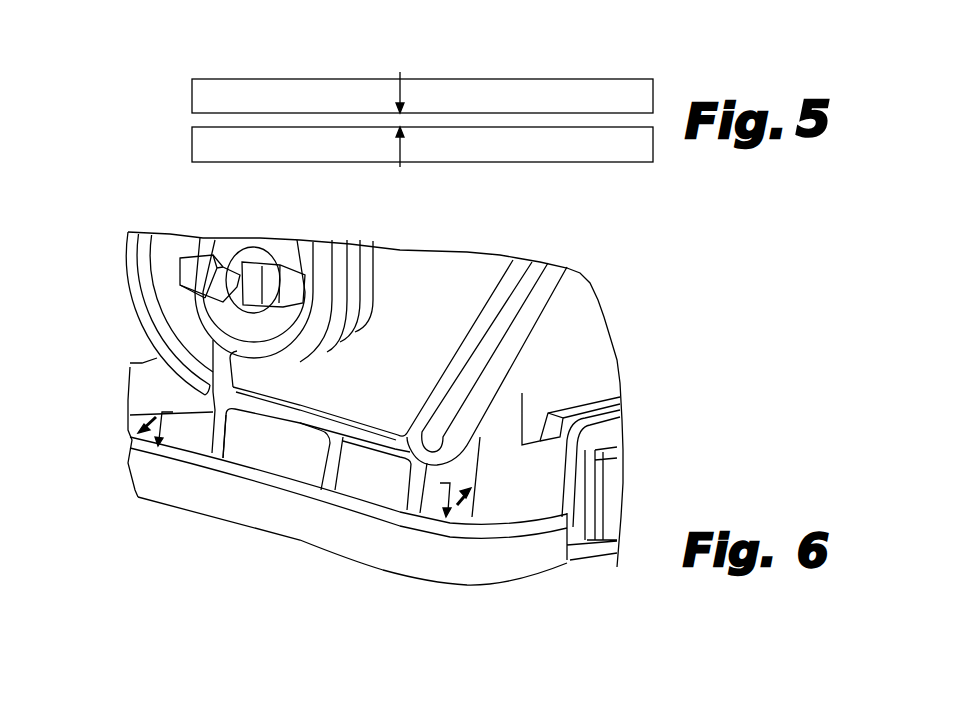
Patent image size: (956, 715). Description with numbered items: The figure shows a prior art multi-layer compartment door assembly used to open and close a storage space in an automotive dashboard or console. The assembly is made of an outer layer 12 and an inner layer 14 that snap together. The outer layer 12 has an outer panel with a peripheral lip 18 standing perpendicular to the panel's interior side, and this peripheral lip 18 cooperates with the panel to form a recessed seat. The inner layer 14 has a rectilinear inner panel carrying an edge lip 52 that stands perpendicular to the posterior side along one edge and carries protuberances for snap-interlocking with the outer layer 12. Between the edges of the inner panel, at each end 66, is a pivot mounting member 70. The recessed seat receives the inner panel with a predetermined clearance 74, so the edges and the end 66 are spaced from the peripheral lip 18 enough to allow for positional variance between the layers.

In FIG. 6, the outer layer 12 is at (167, 513).
In FIG. 6, the inner layer 14 is at (630, 333).
In FIG. 5, the peripheral lip 18 is at (557, 163).
In FIG. 6, the peripheral lip 18 is at (260, 500).
In FIG. 5, the edge lip 52 is at (325, 78).
In FIG. 6, the end 66 is at (207, 450).
In FIG. 6, the pivot mounting member 70 is at (112, 232).
In FIG. 5, the predetermined clearance 74 is at (400, 118).